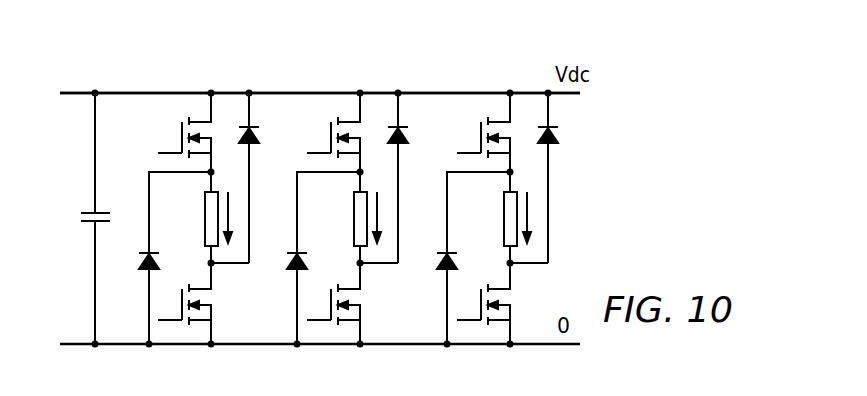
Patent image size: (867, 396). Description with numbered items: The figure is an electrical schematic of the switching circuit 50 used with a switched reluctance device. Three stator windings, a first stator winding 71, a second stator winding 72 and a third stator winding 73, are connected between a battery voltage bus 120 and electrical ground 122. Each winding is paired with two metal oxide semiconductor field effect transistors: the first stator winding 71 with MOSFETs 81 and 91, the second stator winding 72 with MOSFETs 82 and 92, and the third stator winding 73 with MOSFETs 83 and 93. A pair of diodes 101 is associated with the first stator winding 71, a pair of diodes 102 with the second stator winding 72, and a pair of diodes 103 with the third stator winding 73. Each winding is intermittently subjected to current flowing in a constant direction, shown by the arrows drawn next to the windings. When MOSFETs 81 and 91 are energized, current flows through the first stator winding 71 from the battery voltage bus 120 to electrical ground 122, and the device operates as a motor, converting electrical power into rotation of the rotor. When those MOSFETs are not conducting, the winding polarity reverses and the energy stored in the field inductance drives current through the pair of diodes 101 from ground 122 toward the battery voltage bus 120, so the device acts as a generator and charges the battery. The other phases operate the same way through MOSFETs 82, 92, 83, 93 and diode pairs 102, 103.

The switching circuit 50 is at (481, 73).
The battery voltage bus 120 is at (113, 93).
The electrical ground 122 is at (533, 344).
The MOSFET 81 is at (177, 139).
The MOSFET 82 is at (325, 137).
The MOSFET 83 is at (475, 137).
The first stator winding 71 is at (205, 200).
The second stator winding 72 is at (354, 200).
The third stator winding 73 is at (504, 200).
The MOSFET 91 is at (202, 301).
The MOSFET 92 is at (351, 301).
The MOSFET 93 is at (501, 301).
The pair of diodes 101 is at (252, 144).
The pair of diodes 102 is at (401, 144).
The pair of diodes 103 is at (551, 144).